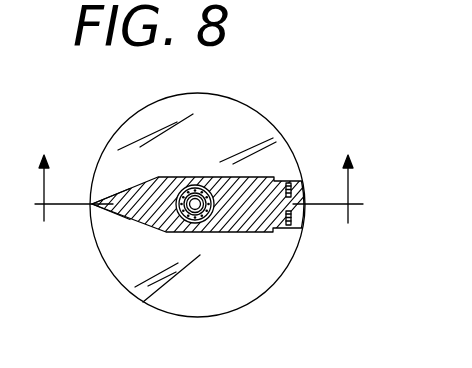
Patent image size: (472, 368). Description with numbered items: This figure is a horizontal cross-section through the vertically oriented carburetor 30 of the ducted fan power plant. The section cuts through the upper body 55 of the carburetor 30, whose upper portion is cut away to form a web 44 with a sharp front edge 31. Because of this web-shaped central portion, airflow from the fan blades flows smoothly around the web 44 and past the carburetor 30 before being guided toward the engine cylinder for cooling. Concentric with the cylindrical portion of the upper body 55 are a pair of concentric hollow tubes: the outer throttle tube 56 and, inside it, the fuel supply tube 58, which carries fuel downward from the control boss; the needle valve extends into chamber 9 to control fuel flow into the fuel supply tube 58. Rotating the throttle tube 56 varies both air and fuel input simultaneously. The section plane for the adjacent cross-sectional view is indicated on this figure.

The carburetor 30 is at (289, 96).
The sharp front edge 31 is at (93, 203).
The web 44 is at (235, 233).
The upper body 55 is at (143, 302).
The throttle tube 56 is at (189, 219).
The fuel supply tube 58 is at (194, 185).
The chamber 9 is at (199, 175).